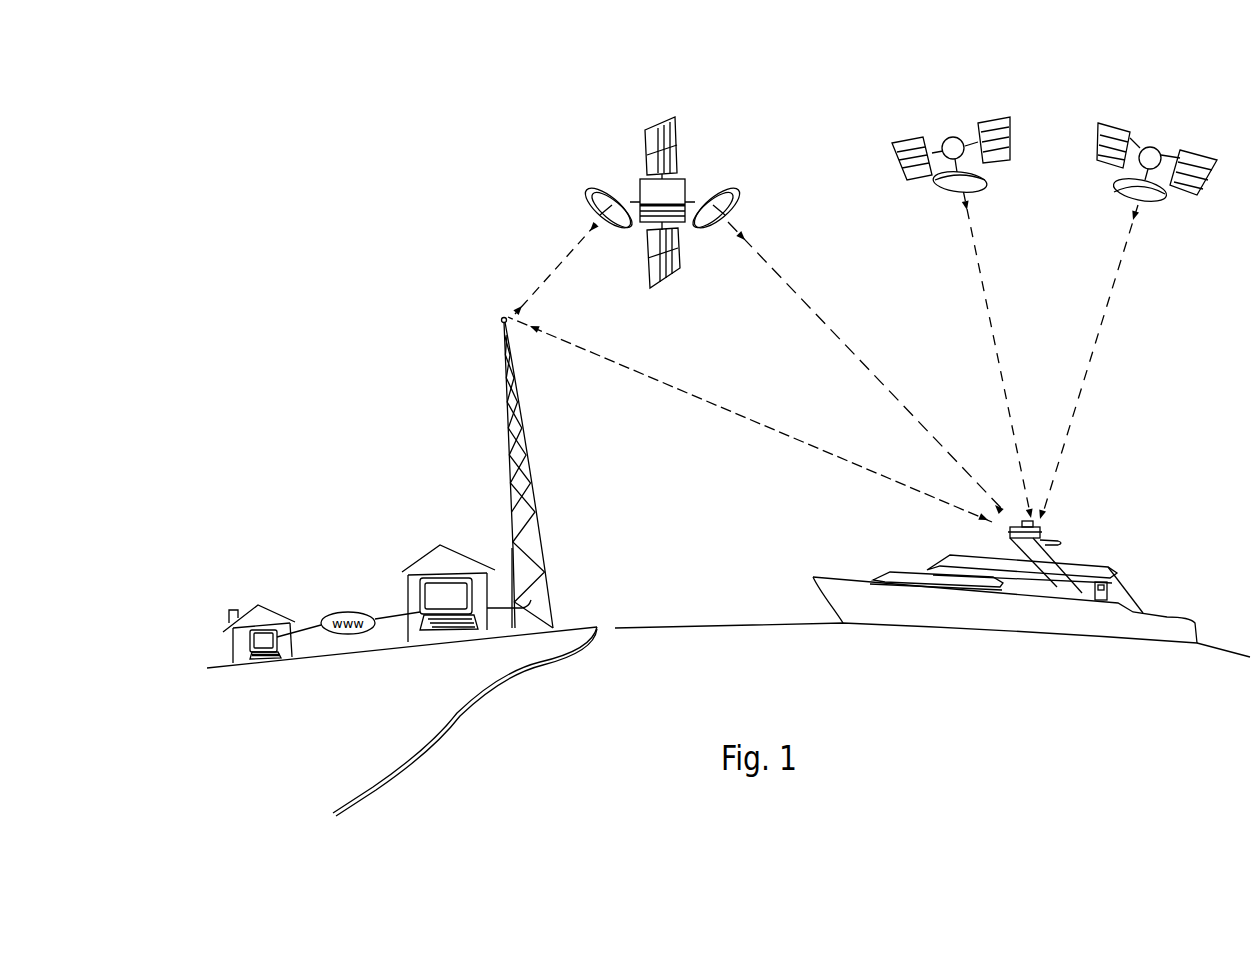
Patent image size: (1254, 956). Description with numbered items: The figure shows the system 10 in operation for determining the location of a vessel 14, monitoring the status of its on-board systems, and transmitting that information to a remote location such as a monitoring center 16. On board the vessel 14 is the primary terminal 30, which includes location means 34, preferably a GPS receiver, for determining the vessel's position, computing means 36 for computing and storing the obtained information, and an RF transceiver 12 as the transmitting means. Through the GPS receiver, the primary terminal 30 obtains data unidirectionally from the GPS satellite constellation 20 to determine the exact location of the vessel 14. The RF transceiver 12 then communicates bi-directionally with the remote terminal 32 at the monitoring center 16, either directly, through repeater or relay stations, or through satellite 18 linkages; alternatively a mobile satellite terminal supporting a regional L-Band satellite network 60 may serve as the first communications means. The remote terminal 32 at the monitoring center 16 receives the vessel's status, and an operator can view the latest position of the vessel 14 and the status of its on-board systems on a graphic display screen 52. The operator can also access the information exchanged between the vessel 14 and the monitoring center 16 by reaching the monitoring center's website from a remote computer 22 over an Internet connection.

The system 10 is at (1187, 366).
The RF transceiver 12 is at (1010, 530).
The vessel 14 is at (1167, 620).
The monitoring center 16 is at (440, 547).
The satellite 18 is at (685, 185).
The GPS satellite constellation 20 is at (907, 177).
The remote computer 22 is at (263, 630).
The primary terminal 30 is at (1062, 499).
The remote terminal 32 is at (399, 580).
The location means 34 is at (1037, 530).
The computing means 36 is at (1018, 522).
The graphic display screen 52 is at (430, 607).
The L-Band satellite network 60 is at (640, 185).